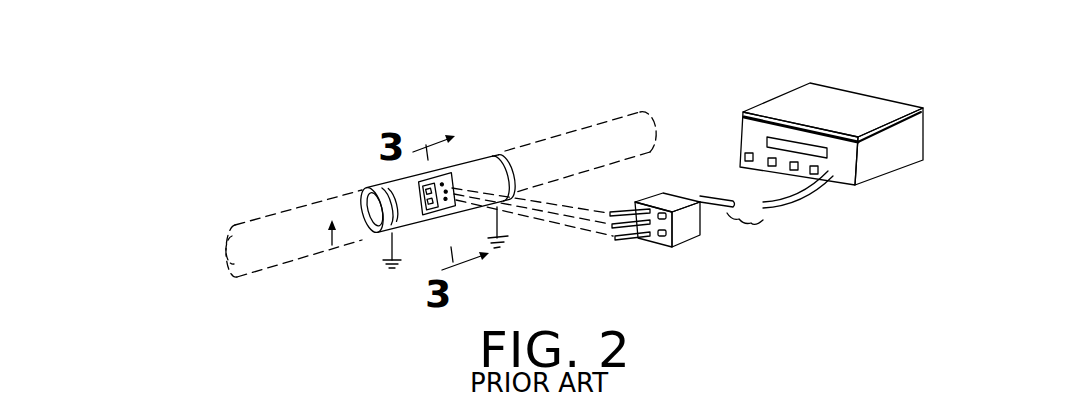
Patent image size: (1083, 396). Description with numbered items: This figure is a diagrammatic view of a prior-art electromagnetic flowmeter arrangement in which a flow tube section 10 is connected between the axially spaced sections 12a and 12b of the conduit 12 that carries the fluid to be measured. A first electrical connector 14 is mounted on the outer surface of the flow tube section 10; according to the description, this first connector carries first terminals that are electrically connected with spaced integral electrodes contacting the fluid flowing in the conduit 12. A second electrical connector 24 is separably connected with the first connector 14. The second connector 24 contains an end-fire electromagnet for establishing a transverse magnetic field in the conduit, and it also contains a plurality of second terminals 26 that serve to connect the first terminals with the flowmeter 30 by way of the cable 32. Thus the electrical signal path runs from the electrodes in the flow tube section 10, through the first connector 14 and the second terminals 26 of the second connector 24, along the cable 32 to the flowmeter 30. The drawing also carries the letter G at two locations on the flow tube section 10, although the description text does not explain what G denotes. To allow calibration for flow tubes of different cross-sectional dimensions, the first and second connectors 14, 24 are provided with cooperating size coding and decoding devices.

The flow tube section 10 is at (473, 177).
The conduit 12 is at (333, 247).
The conduit section 12a is at (253, 243).
The conduit section 12b is at (580, 138).
The first electrical connector 14 is at (440, 217).
The second electrical connector 24 is at (672, 203).
The second terminals 26 is at (630, 243).
The flowmeter 30 is at (873, 155).
The cable 32 is at (777, 210).
The gas flow G is at (377, 187).